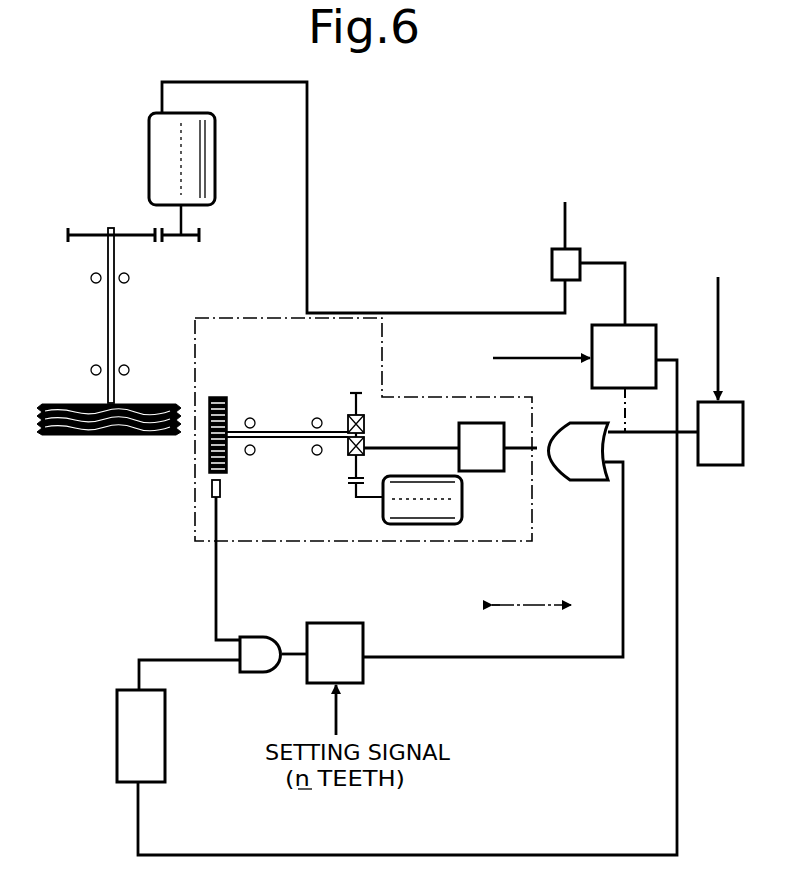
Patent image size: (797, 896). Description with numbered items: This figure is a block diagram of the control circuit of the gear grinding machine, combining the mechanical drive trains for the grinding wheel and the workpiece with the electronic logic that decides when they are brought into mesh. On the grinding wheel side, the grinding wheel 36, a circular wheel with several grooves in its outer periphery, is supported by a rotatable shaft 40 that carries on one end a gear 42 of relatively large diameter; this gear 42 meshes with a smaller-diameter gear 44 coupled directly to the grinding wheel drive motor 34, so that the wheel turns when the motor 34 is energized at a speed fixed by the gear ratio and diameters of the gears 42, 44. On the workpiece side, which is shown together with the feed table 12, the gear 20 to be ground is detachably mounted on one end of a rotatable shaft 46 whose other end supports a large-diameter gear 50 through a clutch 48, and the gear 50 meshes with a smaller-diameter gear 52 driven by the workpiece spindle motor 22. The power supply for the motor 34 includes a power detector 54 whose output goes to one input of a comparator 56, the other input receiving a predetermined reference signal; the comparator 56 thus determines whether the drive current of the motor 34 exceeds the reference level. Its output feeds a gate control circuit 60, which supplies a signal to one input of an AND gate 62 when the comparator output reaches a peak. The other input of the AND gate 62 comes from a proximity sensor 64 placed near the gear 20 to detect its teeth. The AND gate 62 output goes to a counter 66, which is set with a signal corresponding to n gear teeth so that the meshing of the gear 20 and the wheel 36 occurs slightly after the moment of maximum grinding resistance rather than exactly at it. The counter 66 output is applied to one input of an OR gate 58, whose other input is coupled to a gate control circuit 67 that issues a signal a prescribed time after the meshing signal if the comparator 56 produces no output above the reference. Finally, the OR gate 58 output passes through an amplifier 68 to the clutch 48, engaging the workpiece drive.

The feed table 12 is at (455, 545).
The gear 20 is at (219, 395).
The workpiece spindle motor 22 is at (447, 507).
The grinding wheel drive motor 34 is at (175, 141).
The grinding wheel 36 is at (72, 402).
The rotatable shaft 40 is at (108, 297).
The gear 42 is at (93, 235).
The gear 44 is at (168, 240).
The rotatable shaft 46 is at (287, 431).
The clutch 48 is at (366, 432).
The gear 50 is at (352, 408).
The gear 52 is at (345, 480).
The power detector 54 is at (552, 262).
The comparator 56 is at (592, 368).
The OR gate 58 is at (595, 467).
The gate control circuit 60 is at (157, 748).
The AND gate 62 is at (255, 645).
The proximity sensor 64 is at (211, 487).
The counter 66 is at (330, 635).
The gate control circuit 67 is at (715, 466).
The amplifier 68 is at (487, 425).